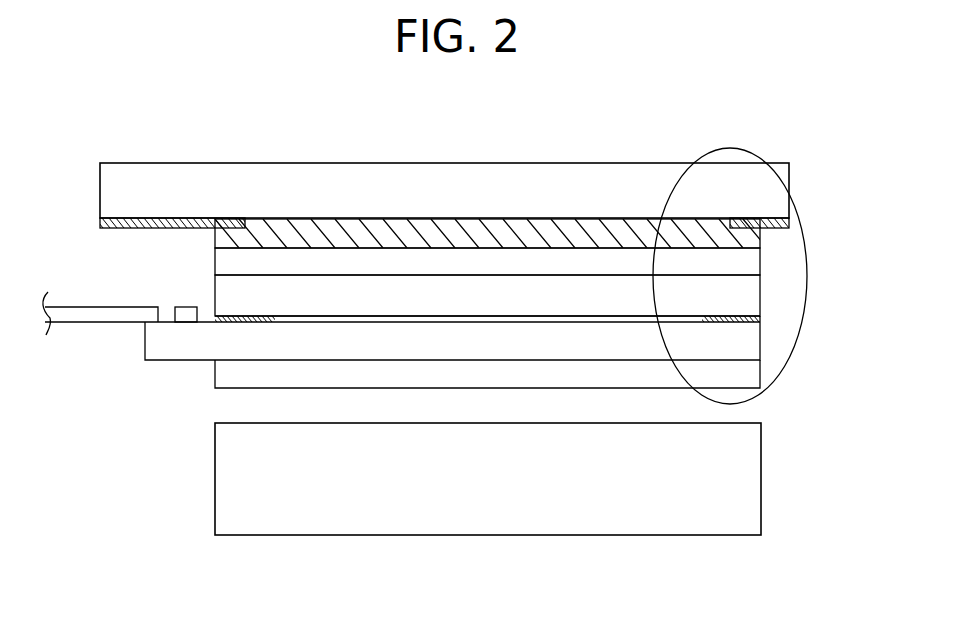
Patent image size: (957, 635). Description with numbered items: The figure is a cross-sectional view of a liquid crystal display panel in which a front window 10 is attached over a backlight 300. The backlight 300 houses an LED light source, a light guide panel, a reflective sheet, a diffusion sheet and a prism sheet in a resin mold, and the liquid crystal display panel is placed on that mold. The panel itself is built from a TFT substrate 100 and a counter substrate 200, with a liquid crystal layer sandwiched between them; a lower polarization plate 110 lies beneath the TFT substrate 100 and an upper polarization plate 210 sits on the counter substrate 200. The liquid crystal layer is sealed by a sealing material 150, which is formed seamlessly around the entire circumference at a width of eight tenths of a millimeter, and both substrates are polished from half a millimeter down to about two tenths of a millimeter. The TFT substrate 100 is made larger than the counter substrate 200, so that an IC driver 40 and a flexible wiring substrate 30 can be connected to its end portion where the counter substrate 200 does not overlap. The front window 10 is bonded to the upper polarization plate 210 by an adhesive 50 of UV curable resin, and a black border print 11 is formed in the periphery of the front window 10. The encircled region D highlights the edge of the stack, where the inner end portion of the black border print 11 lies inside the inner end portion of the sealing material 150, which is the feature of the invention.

The front window 10 is at (579, 170).
The black border print 11 is at (126, 228).
The adhesive 50 is at (446, 232).
The upper polarization plate 210 is at (752, 264).
The counter substrate 200 is at (750, 297).
The sealing material 150 is at (738, 330).
The TFT substrate 100 is at (750, 349).
The lower polarization plate 110 is at (750, 375).
The flexible wiring substrate 30 is at (90, 308).
The IC driver 40 is at (186, 307).
The backlight 300 is at (755, 478).
The enlarged region D is at (733, 148).